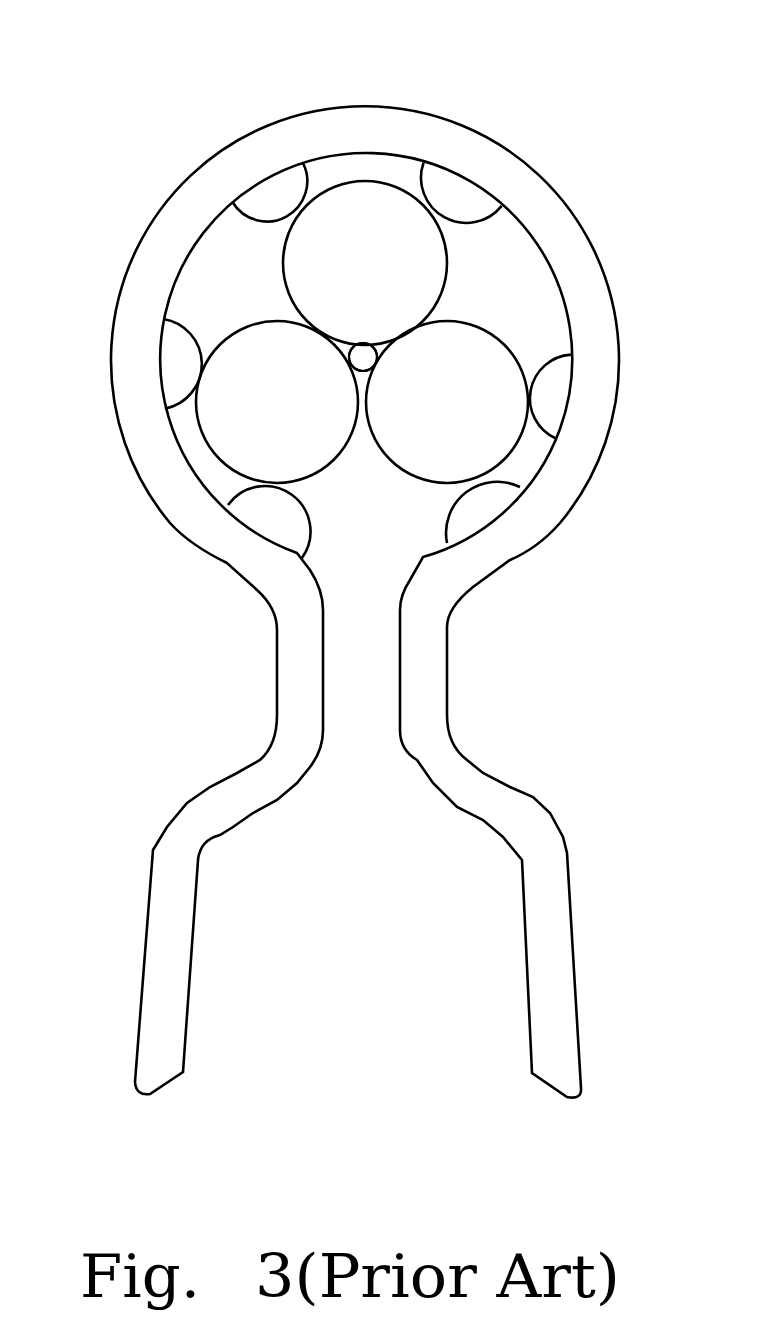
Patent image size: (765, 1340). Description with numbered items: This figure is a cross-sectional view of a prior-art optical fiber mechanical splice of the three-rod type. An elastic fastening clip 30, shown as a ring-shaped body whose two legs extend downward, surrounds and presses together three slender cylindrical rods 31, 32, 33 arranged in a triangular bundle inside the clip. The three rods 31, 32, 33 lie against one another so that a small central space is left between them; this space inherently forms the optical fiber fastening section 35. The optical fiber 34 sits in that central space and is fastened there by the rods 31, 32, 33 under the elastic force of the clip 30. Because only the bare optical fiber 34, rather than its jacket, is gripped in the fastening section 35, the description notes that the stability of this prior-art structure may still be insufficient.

The elastic fastening clip 30 is at (483, 135).
The slender cylindrical rod 31 is at (255, 358).
The slender cylindrical rod 32 is at (413, 268).
The slender cylindrical rod 33 is at (493, 438).
The optical fiber 34 is at (364, 343).
The optical fiber fastening section 35 is at (350, 361).